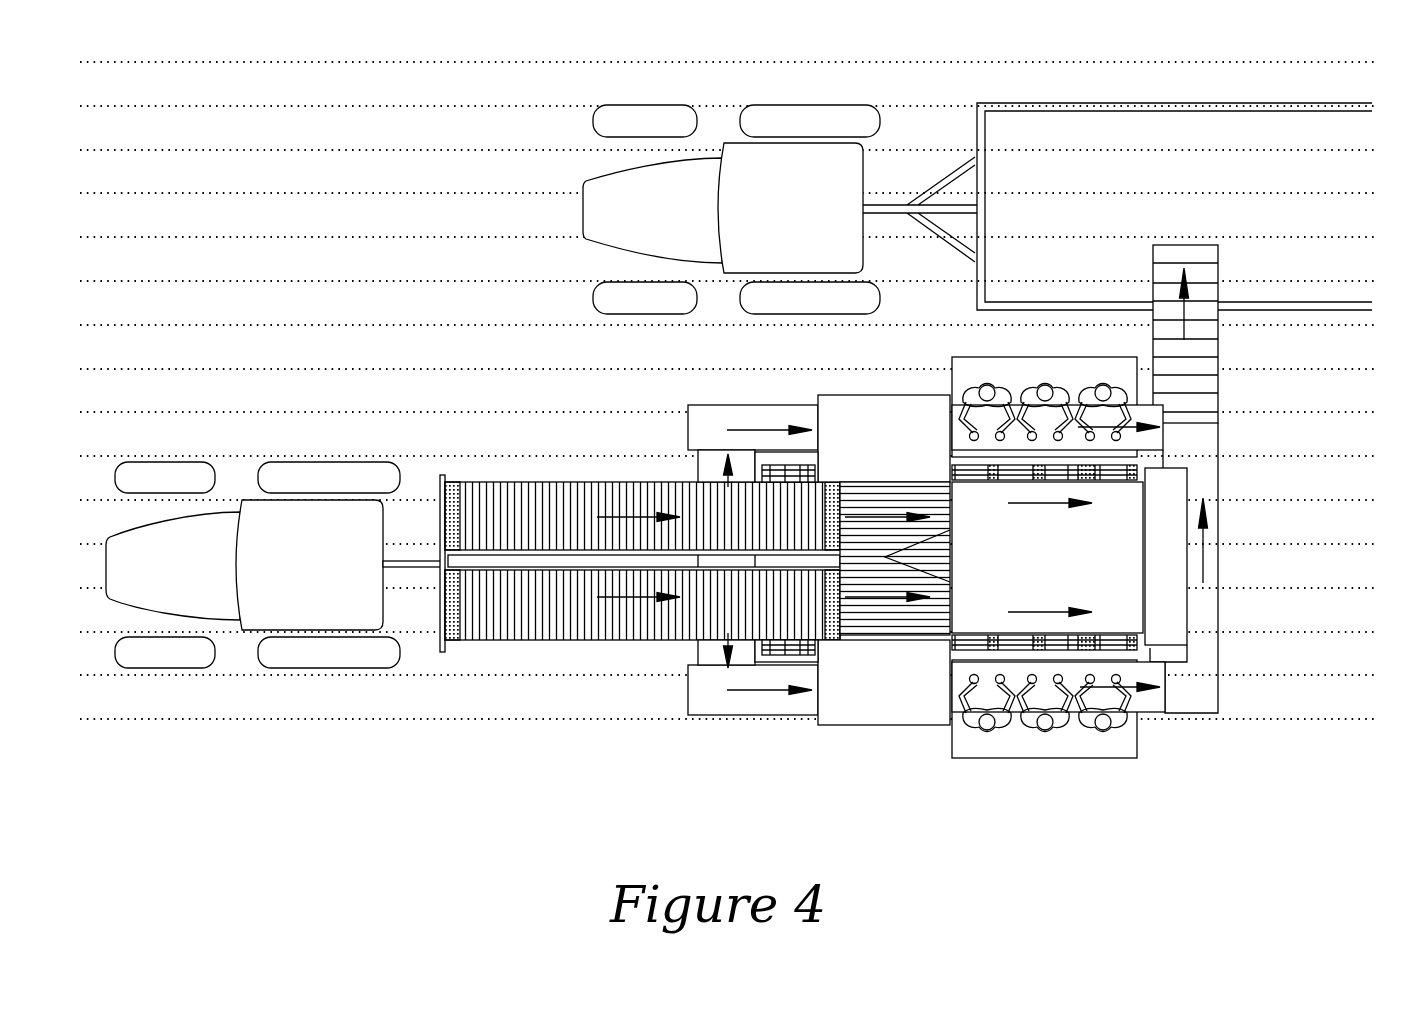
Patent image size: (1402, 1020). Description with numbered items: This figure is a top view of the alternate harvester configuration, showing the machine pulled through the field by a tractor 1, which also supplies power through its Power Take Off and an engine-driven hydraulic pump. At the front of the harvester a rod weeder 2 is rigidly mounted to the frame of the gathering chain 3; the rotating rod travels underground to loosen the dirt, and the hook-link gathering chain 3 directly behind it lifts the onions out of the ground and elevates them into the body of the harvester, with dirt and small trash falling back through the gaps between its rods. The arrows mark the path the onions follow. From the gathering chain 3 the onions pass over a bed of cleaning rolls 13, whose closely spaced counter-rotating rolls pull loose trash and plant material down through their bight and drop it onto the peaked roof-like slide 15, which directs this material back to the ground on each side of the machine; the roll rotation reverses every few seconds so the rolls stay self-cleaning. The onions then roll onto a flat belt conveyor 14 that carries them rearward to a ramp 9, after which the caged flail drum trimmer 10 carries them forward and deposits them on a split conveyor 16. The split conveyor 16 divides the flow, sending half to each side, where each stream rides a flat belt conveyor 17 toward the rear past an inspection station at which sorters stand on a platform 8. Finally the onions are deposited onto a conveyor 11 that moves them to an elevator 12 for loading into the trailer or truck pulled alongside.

The tractor 1 is at (212, 598).
The rod weeder 2 is at (446, 655).
The gathering chain 3 is at (548, 640).
The platform 8 is at (988, 375).
The ramp 9 is at (1178, 505).
The caged flail drum trimmer 10 is at (790, 470).
The conveyor 11 is at (1200, 628).
The elevator 12 is at (1195, 380).
The bed of cleaning rolls 13 is at (860, 640).
The flat belt conveyor 14 is at (1113, 588).
The slide 15 is at (863, 418).
The split conveyor 16 is at (708, 467).
The flat belt conveyor 17 is at (712, 421).